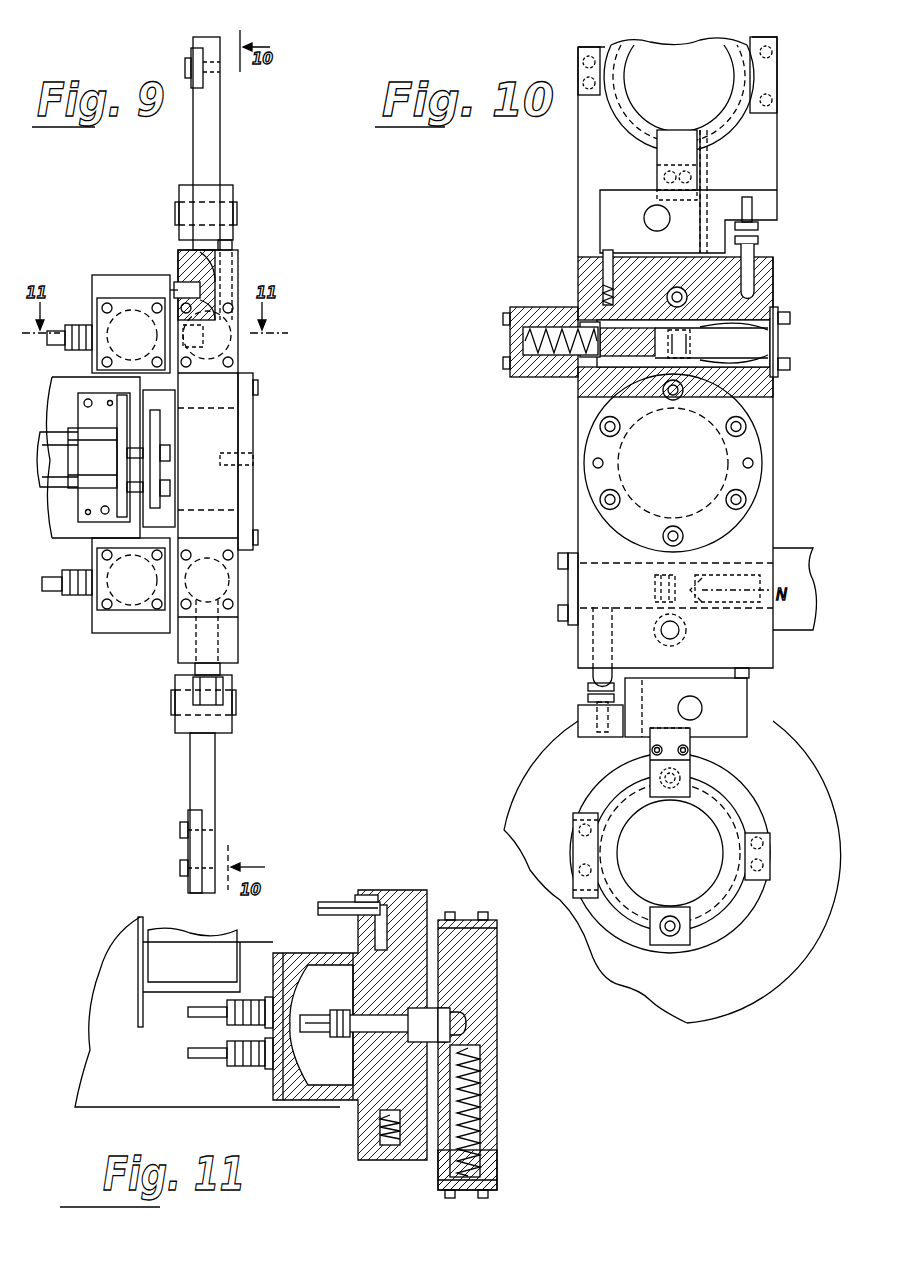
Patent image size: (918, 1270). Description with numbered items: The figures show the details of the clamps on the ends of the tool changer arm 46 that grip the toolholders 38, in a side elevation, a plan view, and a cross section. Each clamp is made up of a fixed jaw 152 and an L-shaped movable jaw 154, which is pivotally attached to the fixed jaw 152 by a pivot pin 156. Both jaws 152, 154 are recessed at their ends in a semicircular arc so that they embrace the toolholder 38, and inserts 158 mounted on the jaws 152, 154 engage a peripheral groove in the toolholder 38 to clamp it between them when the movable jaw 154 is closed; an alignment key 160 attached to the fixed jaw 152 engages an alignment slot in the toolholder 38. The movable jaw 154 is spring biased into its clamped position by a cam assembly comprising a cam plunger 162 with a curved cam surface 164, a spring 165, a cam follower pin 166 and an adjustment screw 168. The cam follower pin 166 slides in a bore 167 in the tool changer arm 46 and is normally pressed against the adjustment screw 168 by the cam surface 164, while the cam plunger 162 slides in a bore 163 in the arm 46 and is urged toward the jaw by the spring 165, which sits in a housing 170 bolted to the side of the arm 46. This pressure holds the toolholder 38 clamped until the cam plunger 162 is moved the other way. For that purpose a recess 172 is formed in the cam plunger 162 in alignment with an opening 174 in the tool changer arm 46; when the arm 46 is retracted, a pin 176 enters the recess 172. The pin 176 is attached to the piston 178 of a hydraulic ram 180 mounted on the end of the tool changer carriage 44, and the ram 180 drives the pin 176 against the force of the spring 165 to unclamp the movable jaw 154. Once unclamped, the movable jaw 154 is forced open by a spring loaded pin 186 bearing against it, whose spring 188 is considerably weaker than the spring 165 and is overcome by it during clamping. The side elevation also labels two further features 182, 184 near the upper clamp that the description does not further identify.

In FIG. 10, the toolholder 38 is at (688, 67).
In FIG. 9, the tool changer carriage 44 is at (62, 524).
In FIG. 10, the tool changer arm 46 is at (578, 452).
In FIG. 10, the fixed jaw 152 is at (595, 166).
In FIG. 10, the movable jaw 154 is at (752, 155).
In FIG. 10, the pivot pin 156 is at (655, 224).
In FIG. 10, the inserts 158 is at (585, 70).
In FIG. 10, the alignment key 160 is at (672, 142).
In FIG. 10, the cam plunger 162 is at (752, 355).
In FIG. 11, the cam plunger 162 is at (470, 992).
In FIG. 10, the bore 163 is at (690, 360).
In FIG. 10, the cam surface 164 is at (779, 320).
In FIG. 10, the spring 165 is at (562, 360).
In FIG. 11, the spring 165 is at (472, 1126).
In FIG. 10, the cam follower pin 166 is at (757, 245).
In FIG. 11, the cam follower pin 166 is at (497, 964).
In FIG. 10, the bore 167 is at (752, 285).
In FIG. 10, the adjustment screw 168 is at (756, 235).
In FIG. 10, the housing 170 is at (510, 322).
In FIG. 11, the housing 170 is at (497, 1166).
In FIG. 10, the recess 172 is at (692, 346).
In FIG. 11, the recess 172 is at (449, 1025).
In FIG. 11, the opening 174 is at (464, 1046).
In FIG. 10, the pin 176 is at (670, 360).
In FIG. 11, the pin 176 is at (466, 1030).
In FIG. 11, the piston 178 is at (380, 940).
In FIG. 9, the hydraulic ram 180 is at (100, 318).
In FIG. 11, the hydraulic ram 180 is at (390, 890).
In FIG. 9, the slot 182 is at (185, 290).
In FIG. 9, the cam surface 184 is at (200, 300).
In FIG. 10, the spring loaded pin 186 is at (608, 252).
In FIG. 10, the spring 188 is at (603, 300).
In FIG. 11, the spring 188 is at (390, 1127).